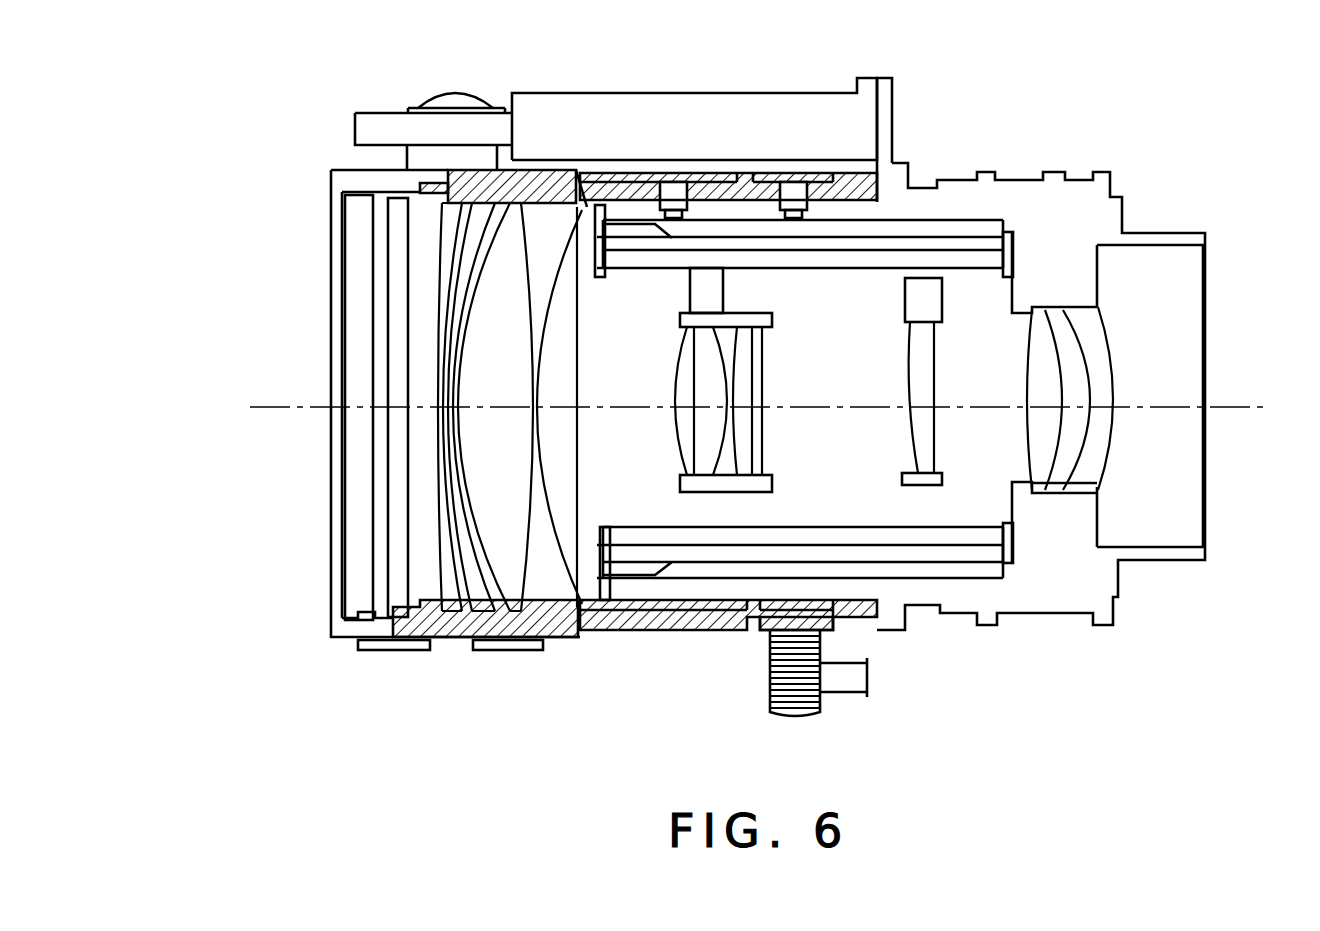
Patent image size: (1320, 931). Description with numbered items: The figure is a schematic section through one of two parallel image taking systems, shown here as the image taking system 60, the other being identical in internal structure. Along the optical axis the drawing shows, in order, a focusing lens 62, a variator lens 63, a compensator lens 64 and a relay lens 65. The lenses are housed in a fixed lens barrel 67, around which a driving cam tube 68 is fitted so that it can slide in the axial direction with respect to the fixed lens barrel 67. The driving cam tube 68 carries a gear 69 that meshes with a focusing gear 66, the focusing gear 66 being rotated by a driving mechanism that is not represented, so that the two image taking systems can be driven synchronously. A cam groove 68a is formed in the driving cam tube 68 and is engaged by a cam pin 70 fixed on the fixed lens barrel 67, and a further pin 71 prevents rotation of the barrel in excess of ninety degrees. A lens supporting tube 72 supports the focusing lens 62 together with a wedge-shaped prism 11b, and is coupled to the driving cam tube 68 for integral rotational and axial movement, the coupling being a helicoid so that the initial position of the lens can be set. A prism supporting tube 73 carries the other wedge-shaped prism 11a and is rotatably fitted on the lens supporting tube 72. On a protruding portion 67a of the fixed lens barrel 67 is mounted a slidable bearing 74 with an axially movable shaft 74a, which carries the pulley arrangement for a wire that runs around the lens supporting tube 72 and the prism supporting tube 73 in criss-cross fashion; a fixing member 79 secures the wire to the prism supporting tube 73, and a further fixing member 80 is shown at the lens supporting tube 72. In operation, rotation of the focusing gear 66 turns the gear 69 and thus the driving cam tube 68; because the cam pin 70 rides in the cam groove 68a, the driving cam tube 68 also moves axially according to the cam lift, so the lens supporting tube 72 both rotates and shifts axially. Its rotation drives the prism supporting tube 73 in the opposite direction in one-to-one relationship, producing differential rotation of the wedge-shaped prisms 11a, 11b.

The image taking system 60 is at (272, 540).
The wedge-shaped prism 11a is at (357, 266).
The wedge-shaped prism 11b is at (427, 330).
The focusing lens 62 is at (570, 378).
The variator lens 63 is at (750, 387).
The compensator lens 64 is at (930, 382).
The relay lens 65 is at (1108, 378).
The focusing gear 66 is at (770, 690).
The fixed lens barrel 67 is at (920, 600).
The protruding portion 67a is at (887, 128).
The driving cam tube 68 is at (863, 627).
The cam groove 68a is at (813, 183).
The gear 69 is at (763, 630).
The cam pin 70 is at (793, 190).
The pin 71 is at (678, 185).
The lens supporting tube 72 is at (541, 170).
The prism supporting tube 73 is at (346, 173).
The slidable bearing 74 is at (588, 108).
The shaft 74a is at (380, 120).
The fixing member 79 is at (392, 652).
The rear ring 80 is at (505, 652).